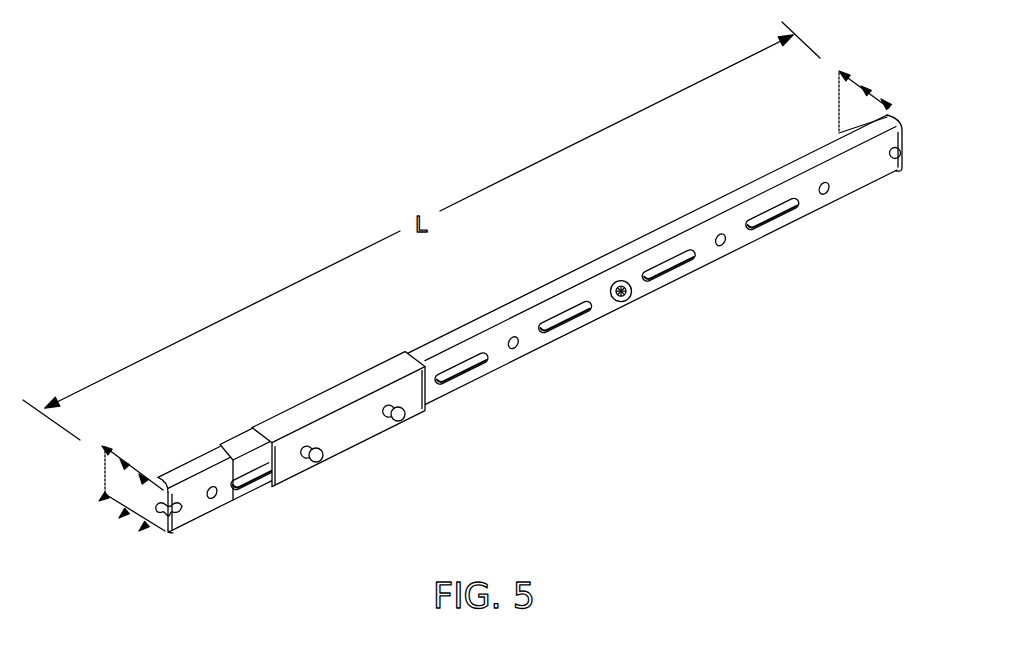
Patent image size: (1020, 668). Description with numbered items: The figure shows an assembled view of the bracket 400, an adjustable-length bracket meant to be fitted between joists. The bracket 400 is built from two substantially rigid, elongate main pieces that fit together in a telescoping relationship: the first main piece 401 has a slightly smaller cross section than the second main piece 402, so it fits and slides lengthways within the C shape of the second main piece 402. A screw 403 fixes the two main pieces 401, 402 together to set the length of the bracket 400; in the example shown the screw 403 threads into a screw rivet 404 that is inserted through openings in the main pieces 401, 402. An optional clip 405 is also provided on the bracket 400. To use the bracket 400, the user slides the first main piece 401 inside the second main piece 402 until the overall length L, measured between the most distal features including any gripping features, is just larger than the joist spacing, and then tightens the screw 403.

The bracket 400 is at (500, 323).
The first main piece 401 is at (187, 472).
The second main piece 402 is at (243, 488).
The screw 403 is at (641, 299).
The screw rivet 404 is at (617, 300).
The clip 405 is at (368, 430).